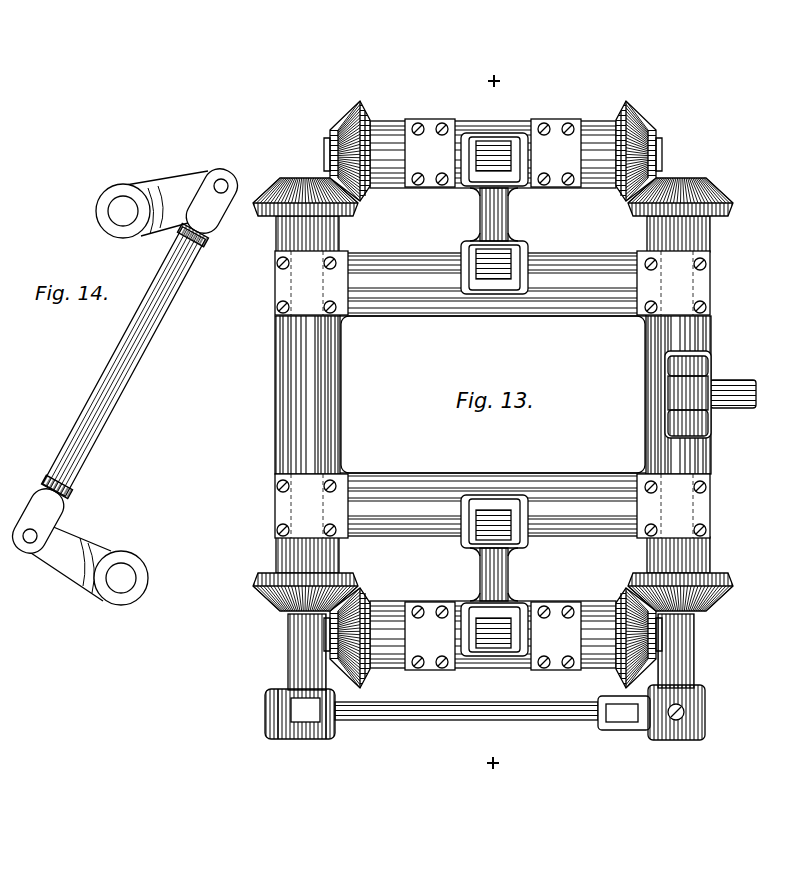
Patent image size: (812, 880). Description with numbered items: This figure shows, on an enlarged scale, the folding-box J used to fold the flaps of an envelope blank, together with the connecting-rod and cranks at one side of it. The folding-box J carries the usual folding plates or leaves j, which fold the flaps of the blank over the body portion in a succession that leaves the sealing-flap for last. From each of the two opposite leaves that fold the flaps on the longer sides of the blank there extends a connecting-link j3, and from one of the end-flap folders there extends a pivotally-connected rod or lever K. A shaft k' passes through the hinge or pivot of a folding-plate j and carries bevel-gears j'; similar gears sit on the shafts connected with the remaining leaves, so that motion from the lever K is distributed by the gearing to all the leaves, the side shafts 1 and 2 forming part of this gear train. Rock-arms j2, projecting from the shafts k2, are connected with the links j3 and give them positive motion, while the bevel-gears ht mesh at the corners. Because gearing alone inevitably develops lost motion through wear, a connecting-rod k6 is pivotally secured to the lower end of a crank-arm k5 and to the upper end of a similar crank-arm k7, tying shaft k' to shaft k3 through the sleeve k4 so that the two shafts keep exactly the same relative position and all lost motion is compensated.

In FIG. 13, the folding-box J is at (492, 394).
In FIG. 13, the folding plates or leaves j is at (429, 394).
In FIG. 13, the bevel-gears j' is at (493, 394).
In FIG. 13, the rock-arms j2 is at (487, 116).
In FIG. 13, the connecting-link j3 is at (500, 216).
In FIG. 13, the left side shaft 1 is at (318, 343).
In FIG. 13, the right side shaft 2 is at (648, 343).
In FIG. 13, the bevel gear ht is at (347, 96).
In FIG. 13, the pivotally-connected rod K is at (708, 371).
In FIG. 13, the shaft k' is at (685, 651).
In FIG. 14, the shaft k' is at (134, 578).
In FIG. 13, the shafts k2 is at (318, 632).
In FIG. 13, the shaft k3 is at (290, 169).
In FIG. 14, the shaft k3 is at (102, 208).
In FIG. 13, the gear hub / upper arm sleeve k4 is at (655, 133).
In FIG. 14, the gear hub / upper arm sleeve k4 is at (112, 230).
In FIG. 13, the crank-arm k5 is at (697, 685).
In FIG. 14, the crank-arm k5 is at (115, 600).
In FIG. 13, the connecting-rod k6 is at (492, 717).
In FIG. 14, the connecting-rod k6 is at (95, 418).
In FIG. 13, the crank-arm k7 is at (322, 724).